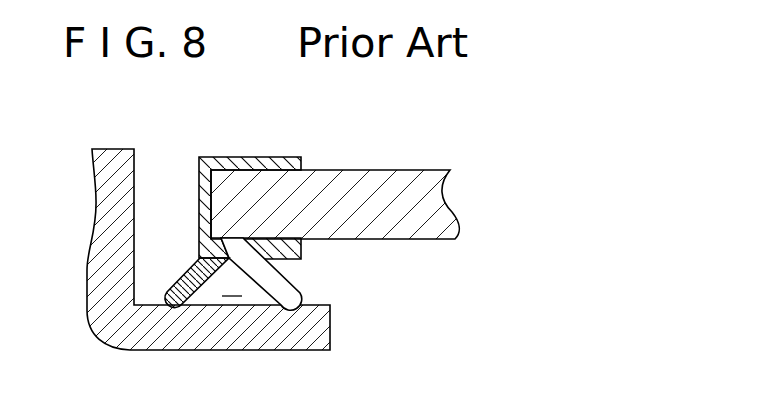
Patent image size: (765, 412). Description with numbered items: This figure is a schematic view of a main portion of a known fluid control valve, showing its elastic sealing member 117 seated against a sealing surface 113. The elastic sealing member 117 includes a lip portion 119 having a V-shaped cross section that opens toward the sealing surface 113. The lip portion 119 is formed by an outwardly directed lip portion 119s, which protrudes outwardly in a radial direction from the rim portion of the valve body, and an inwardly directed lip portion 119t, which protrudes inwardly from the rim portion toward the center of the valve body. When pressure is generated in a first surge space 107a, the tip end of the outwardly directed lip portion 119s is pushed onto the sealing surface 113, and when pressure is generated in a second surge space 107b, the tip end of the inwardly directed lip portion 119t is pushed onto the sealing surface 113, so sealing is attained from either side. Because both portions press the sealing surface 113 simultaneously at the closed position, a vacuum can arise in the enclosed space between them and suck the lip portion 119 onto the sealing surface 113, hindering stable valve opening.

The first surge space 107a is at (204, 137).
The second surge space 107b is at (474, 327).
The sealing surface 113 is at (330, 297).
The elastic sealing member 117 is at (268, 157).
The lip portion 119 is at (285, 233).
The outwardly directed lip portion 119s is at (173, 290).
The inwardly directed lip portion 119t is at (283, 272).